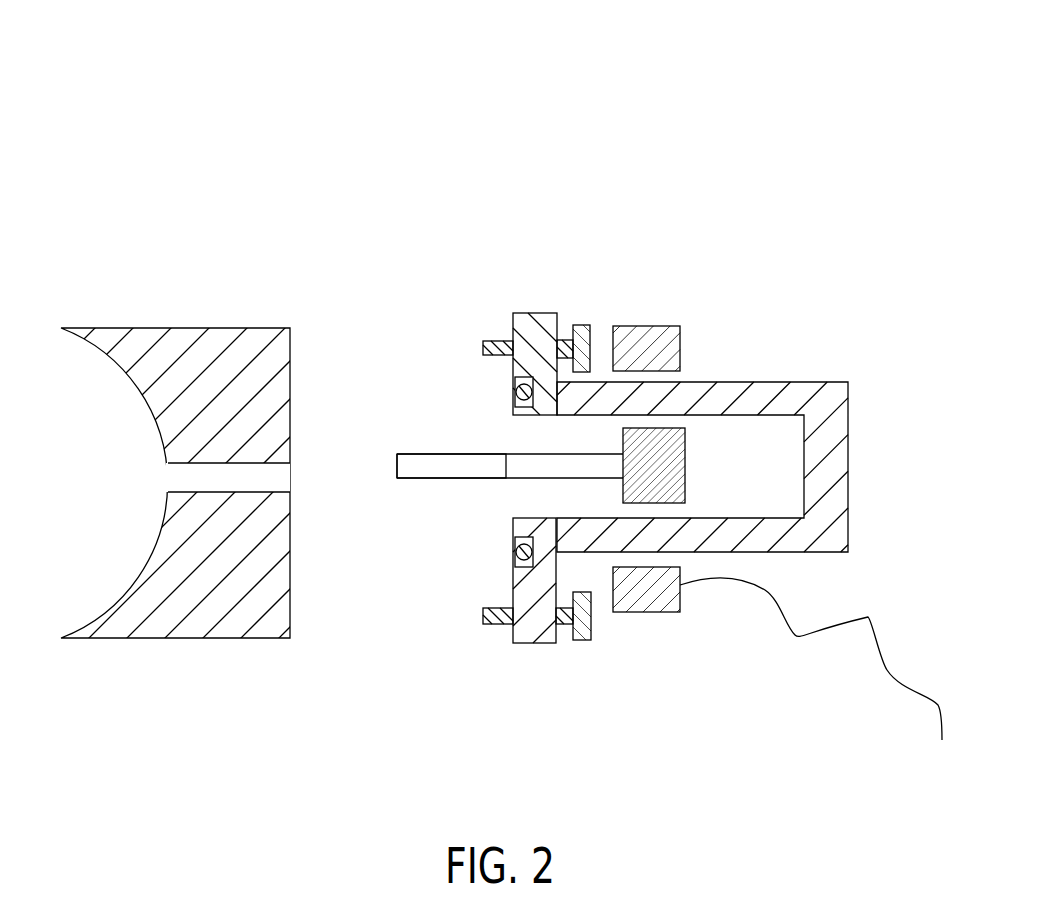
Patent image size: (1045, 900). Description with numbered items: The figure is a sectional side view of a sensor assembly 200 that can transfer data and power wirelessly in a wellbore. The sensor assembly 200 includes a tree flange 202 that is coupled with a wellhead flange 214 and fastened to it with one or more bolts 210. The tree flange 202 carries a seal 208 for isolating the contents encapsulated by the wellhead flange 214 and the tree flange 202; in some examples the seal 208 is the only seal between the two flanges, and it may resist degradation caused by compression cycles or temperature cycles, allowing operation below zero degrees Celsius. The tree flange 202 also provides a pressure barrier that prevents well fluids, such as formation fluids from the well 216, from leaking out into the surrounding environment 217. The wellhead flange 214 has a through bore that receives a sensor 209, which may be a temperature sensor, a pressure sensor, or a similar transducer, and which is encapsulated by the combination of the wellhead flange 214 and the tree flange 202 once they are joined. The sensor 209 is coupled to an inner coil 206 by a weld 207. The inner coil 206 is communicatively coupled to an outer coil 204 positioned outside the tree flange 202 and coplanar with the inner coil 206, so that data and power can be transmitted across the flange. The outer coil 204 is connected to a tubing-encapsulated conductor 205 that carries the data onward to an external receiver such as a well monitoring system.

The sensor assembly 200 is at (618, 240).
The tree flange 202 is at (755, 382).
The outer coil 204 is at (640, 325).
The tubing-encapsulated conductor 205 is at (803, 638).
The inner coil 206 is at (695, 497).
The weld 207 is at (495, 490).
The seal 208 is at (515, 385).
The sensor 209 is at (499, 468).
The bolt 210 is at (588, 642).
The wellhead flange 214 is at (295, 534).
The well 216 is at (120, 492).
The environment 217 is at (270, 92).